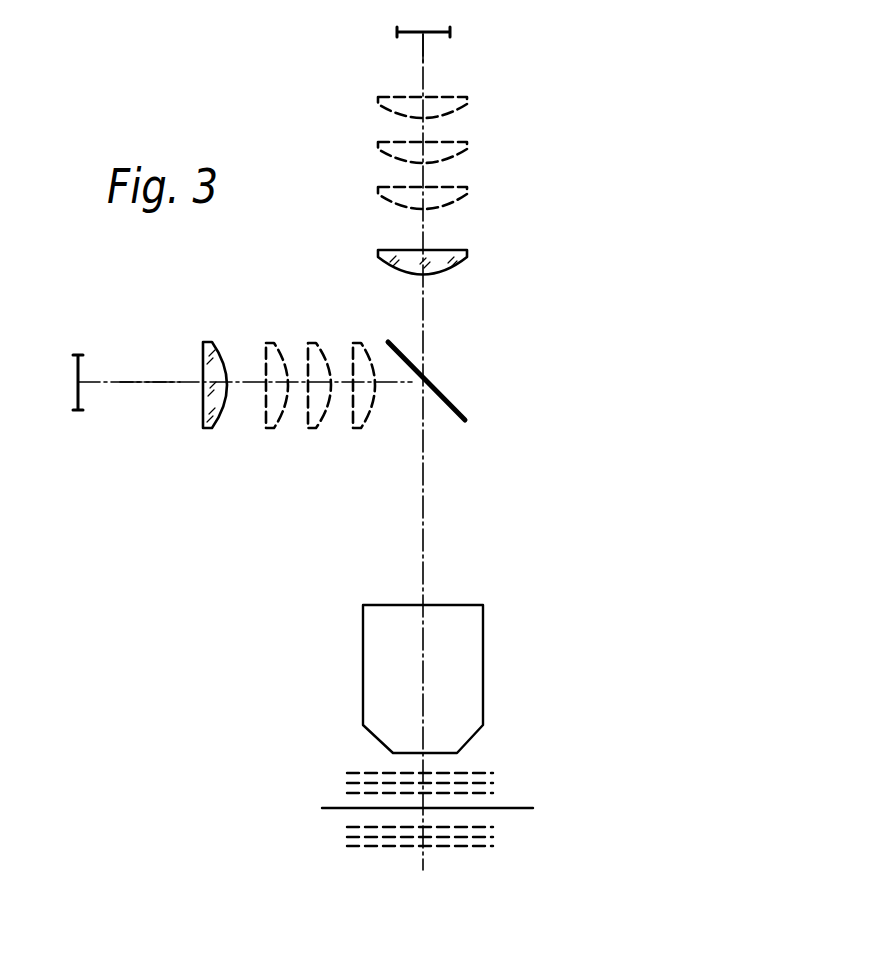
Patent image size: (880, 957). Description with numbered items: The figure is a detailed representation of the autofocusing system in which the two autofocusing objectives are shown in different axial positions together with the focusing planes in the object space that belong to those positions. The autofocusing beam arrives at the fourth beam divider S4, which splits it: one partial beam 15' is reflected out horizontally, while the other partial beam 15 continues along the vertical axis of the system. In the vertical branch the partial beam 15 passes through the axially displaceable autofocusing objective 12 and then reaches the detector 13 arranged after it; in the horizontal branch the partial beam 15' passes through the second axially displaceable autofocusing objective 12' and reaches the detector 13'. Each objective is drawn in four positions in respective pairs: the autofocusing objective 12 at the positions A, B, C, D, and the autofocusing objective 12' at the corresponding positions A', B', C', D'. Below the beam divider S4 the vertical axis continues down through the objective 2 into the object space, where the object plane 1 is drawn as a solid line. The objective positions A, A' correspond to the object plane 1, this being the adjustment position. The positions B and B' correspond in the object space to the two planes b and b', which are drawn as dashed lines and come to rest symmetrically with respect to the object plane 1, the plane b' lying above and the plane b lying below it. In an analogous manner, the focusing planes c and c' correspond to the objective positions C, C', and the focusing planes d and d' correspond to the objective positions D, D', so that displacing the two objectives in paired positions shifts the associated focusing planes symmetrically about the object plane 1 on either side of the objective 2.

The detector 13 is at (488, 20).
The partial beam 15 is at (501, 57).
The autofocusing objective 12 is at (463, 182).
The objective position B is at (410, 103).
The objective position C is at (410, 148).
The objective position D is at (410, 194).
The objective position A is at (410, 259).
The fourth beam divider S4 is at (443, 388).
The autofocusing objective 12' is at (286, 415).
The objective position A' is at (214, 368).
The objective position B' is at (363, 368).
The objective position C' is at (319, 368).
The objective position D' is at (277, 368).
The detector 13' is at (45, 416).
The partial beam 15' is at (149, 429).
The objective 2 is at (388, 678).
The object plane 1 is at (336, 808).
The focusing plane b' is at (462, 749).
The focusing plane c' is at (461, 766).
The focusing plane d' is at (462, 785).
The focusing plane d is at (459, 830).
The focusing plane c is at (458, 850).
The focusing plane b is at (459, 866).